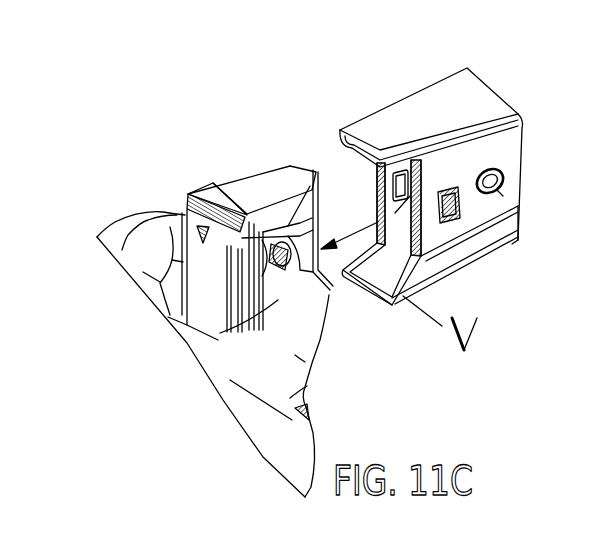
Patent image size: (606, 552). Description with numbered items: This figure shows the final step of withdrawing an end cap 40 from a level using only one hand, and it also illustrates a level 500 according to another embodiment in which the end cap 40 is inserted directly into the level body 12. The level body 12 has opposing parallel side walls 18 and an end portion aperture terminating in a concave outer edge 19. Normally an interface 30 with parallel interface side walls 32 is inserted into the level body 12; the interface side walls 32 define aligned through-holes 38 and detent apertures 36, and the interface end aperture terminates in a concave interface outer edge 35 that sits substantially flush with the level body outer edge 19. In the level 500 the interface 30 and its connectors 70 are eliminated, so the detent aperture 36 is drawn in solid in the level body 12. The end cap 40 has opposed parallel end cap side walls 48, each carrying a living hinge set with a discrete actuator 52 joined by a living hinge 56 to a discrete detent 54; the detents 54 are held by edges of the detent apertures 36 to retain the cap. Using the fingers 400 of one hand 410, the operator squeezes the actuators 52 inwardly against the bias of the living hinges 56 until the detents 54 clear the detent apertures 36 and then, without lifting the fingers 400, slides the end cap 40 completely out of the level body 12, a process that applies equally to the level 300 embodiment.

The level 500 is at (410, 64).
The side walls 18 is at (511, 153).
The level body 12 is at (506, 179).
The concave outer edge 19 is at (379, 205).
The concave interface outer edge 35 is at (367, 287).
The detent apertures 36 is at (392, 180).
The through-holes 38 is at (455, 207).
The interface side walls 32 is at (426, 248).
The interface 30 is at (522, 244).
The connectors 70 is at (500, 193).
The end cap 40 is at (188, 193).
The end cap side walls 48 is at (293, 213).
The actuator 52 is at (247, 211).
The living hinge 56 is at (325, 190).
The detent 54 is at (312, 270).
The fingers 400 is at (305, 362).
The hand 410 is at (292, 420).
The level 300 is at (123, 225).